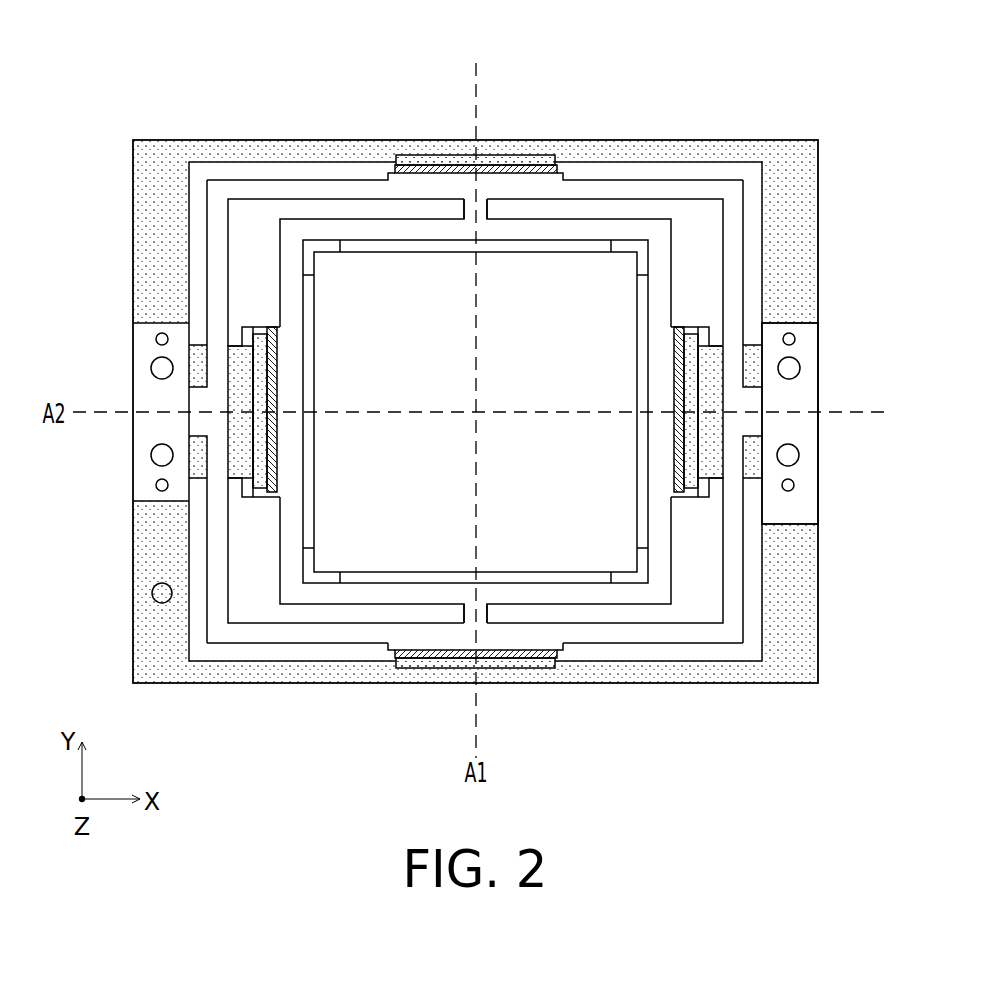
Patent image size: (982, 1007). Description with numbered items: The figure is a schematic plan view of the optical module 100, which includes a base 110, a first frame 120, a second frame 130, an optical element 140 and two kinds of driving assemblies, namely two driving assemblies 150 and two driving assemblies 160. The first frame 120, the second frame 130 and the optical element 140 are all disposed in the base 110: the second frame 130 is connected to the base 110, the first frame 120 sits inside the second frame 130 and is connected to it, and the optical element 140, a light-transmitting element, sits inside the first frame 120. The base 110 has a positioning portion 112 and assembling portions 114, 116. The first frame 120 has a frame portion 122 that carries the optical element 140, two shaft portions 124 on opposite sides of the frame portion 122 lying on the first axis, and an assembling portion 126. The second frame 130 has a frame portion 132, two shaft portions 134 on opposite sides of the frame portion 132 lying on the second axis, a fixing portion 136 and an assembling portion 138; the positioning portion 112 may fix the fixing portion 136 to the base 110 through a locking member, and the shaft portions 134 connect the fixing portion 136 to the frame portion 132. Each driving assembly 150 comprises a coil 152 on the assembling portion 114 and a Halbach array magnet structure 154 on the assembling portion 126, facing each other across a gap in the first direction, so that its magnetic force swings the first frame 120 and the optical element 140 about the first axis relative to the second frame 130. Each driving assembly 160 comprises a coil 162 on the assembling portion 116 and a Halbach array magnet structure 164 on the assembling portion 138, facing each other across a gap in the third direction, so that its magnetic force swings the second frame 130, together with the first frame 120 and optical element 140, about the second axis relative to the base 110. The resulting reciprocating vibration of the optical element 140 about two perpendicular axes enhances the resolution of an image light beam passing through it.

The optical module 100 is at (818, 733).
The base 110 is at (165, 660).
The positioning portion 112 is at (141, 457).
The assembling portion 114 is at (250, 499).
The assembling portion 116 is at (391, 680).
The first frame 120 is at (477, 332).
The frame portion 122 is at (652, 218).
The shaft portions 124 is at (488, 211).
The assembling portion 126 is at (672, 340).
The second frame 130 is at (503, 476).
The frame portion 132 is at (631, 646).
The shaft portions 134 is at (753, 425).
The fixing portion 136 is at (792, 515).
The assembling portion 138 is at (570, 648).
The optical element 140 is at (345, 287).
The driving assembly 150 is at (159, 474).
The coil 152 is at (261, 490).
The Halbach array magnet structure 154 is at (270, 493).
The driving assembly 160 is at (448, 107).
The coil 162 is at (403, 156).
The Halbach array magnet structure 164 is at (476, 127).